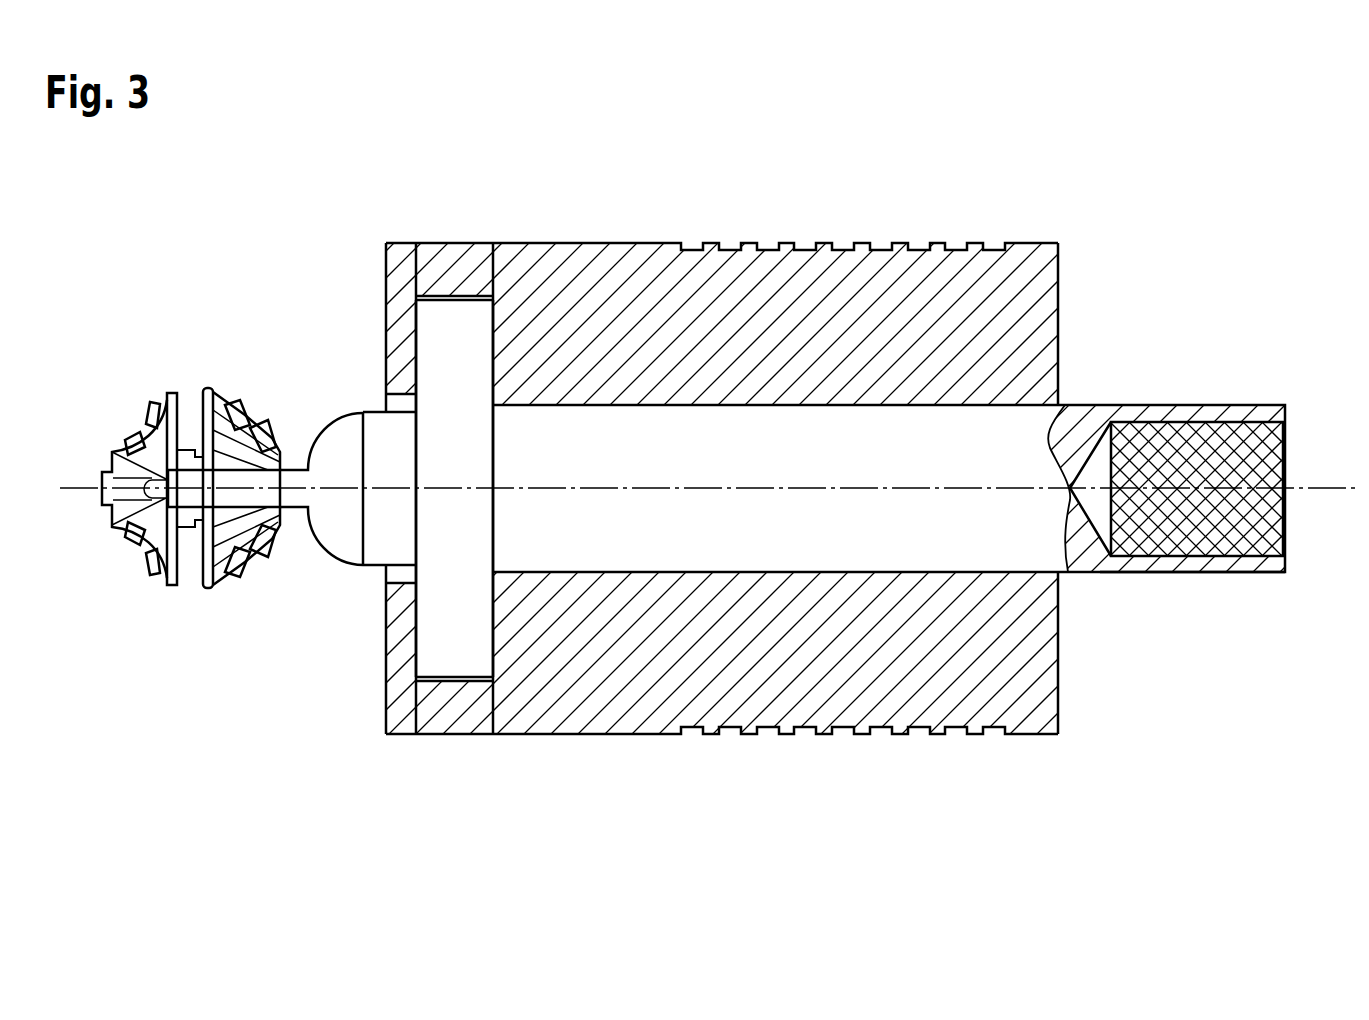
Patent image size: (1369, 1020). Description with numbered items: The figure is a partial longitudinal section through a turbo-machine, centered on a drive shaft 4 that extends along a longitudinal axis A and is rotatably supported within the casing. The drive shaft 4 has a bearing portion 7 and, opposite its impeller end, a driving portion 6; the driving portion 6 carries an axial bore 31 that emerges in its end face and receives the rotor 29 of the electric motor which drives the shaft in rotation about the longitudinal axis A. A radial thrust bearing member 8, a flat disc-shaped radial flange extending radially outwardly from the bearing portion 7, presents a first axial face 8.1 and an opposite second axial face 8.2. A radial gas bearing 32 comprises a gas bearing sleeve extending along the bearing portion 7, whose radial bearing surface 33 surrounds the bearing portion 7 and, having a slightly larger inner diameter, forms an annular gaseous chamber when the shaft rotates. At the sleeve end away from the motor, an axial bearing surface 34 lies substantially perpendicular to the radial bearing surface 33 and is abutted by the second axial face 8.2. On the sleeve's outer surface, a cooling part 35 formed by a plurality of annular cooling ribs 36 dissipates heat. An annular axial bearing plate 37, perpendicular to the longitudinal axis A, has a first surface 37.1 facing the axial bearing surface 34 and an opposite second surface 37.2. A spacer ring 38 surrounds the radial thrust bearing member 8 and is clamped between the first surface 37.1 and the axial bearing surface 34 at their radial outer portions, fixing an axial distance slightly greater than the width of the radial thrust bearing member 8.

The drive shaft 4 is at (1088, 427).
The driving portion 6 is at (1147, 563).
The bearing portion 7 is at (1023, 438).
The radial thrust bearing member 8 is at (437, 615).
The first axial face 8.1 is at (403, 340).
The second axial face 8.2 is at (504, 636).
The rotor 29 is at (1217, 462).
The axial bore 31 is at (1160, 439).
The radial gas bearing 32 is at (610, 282).
The radial bearing surface 33 is at (836, 564).
The axial bearing surface 34 is at (482, 714).
The cooling part 35 is at (805, 248).
The annular cooling ribs 36 is at (748, 250).
The axial bearing plate 37 is at (403, 280).
The first surface 37.1 is at (430, 256).
The second surface 37.2 is at (373, 659).
The spacer ring 38 is at (436, 703).
The longitudinal axis A is at (1319, 490).